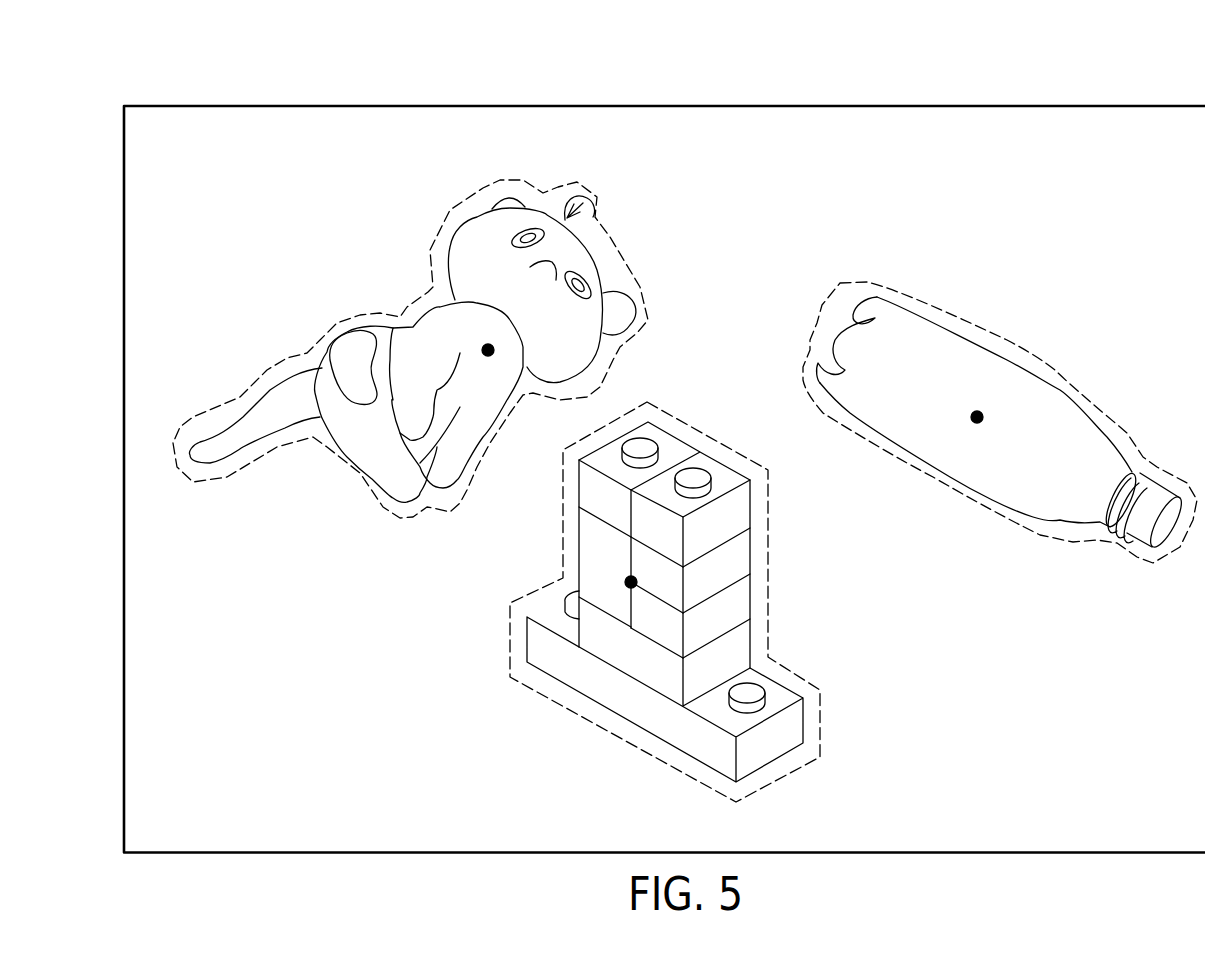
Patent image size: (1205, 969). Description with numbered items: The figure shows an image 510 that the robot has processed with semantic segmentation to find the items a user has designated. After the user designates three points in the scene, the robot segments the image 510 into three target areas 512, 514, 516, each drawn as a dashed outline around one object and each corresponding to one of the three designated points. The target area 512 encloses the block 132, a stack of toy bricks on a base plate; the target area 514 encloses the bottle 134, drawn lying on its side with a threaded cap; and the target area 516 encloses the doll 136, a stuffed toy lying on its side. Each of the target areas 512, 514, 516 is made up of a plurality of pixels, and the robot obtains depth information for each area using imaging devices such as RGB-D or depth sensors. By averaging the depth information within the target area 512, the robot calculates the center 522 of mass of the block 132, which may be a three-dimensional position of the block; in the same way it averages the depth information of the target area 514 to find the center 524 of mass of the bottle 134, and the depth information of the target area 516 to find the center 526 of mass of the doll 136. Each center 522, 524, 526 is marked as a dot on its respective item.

The image 510 is at (1078, 104).
The target area 512 is at (665, 408).
The target area 514 is at (950, 310).
The target area 516 is at (447, 213).
The block 132 is at (707, 445).
The bottle 134 is at (1008, 357).
The doll 136 is at (400, 323).
The center of mass of the block 522 is at (625, 582).
The center of mass of the bottle 524 is at (977, 423).
The center of mass of the doll 526 is at (494, 350).